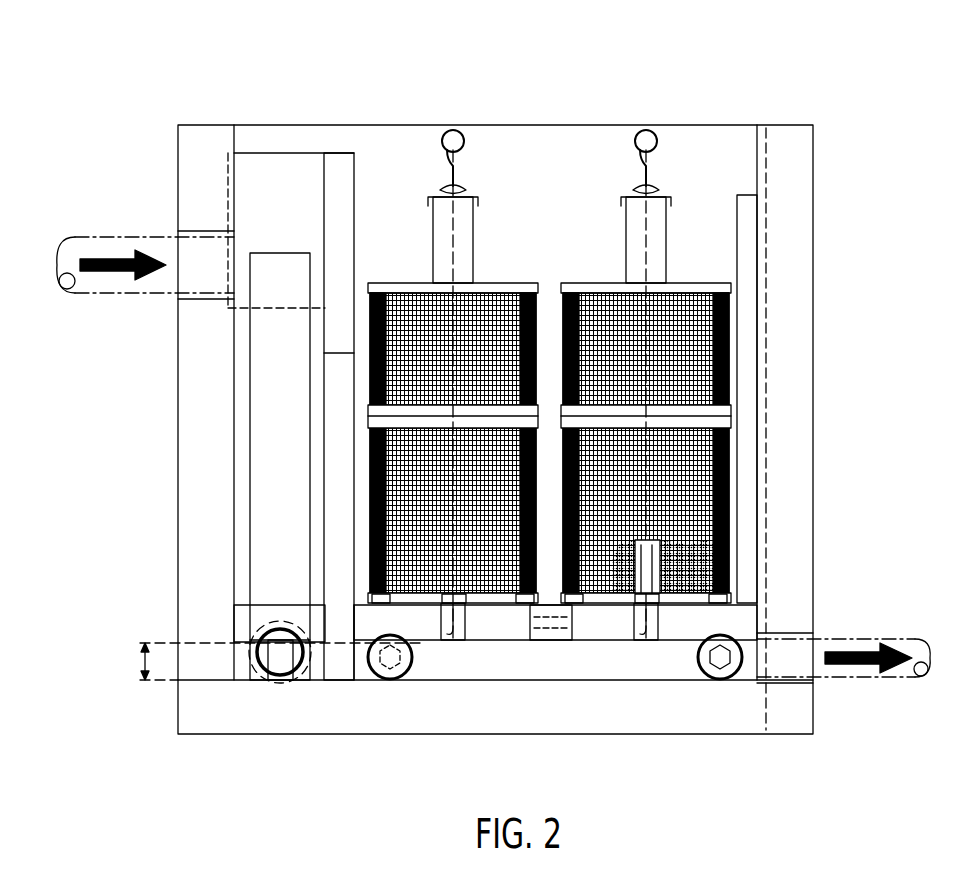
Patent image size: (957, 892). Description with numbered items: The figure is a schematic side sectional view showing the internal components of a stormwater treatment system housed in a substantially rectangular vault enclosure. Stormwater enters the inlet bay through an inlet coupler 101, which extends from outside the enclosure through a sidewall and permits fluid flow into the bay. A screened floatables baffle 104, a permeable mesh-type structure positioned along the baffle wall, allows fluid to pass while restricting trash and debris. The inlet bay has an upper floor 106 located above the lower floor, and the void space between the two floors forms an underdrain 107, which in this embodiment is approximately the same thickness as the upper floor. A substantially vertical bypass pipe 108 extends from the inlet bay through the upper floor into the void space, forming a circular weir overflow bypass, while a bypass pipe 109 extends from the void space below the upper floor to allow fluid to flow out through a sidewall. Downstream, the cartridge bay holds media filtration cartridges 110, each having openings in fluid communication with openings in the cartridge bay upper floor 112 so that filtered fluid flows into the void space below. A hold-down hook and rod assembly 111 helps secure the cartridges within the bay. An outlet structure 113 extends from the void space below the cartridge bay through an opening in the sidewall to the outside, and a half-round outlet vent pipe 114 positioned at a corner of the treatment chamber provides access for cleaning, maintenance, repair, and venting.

The inlet coupler 101 is at (178, 296).
The screened floatables baffle 104 is at (270, 197).
The upper floor 106 is at (273, 603).
The underdrain 107 is at (143, 662).
The bypass pipe 108 is at (273, 253).
The bypass pipe 109 is at (279, 680).
The media filtration cartridge 110 is at (690, 307).
The hold-down hook and rod assembly 111 is at (452, 125).
The upper floor 112 is at (612, 640).
The outlet structure 113 is at (815, 678).
The half-round outlet vent pipe 114 is at (747, 192).